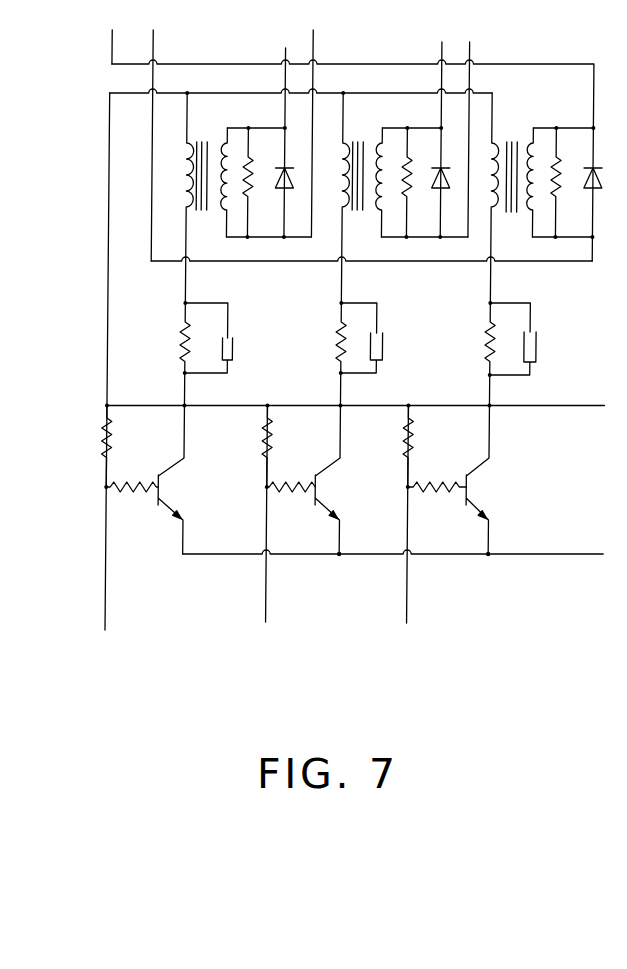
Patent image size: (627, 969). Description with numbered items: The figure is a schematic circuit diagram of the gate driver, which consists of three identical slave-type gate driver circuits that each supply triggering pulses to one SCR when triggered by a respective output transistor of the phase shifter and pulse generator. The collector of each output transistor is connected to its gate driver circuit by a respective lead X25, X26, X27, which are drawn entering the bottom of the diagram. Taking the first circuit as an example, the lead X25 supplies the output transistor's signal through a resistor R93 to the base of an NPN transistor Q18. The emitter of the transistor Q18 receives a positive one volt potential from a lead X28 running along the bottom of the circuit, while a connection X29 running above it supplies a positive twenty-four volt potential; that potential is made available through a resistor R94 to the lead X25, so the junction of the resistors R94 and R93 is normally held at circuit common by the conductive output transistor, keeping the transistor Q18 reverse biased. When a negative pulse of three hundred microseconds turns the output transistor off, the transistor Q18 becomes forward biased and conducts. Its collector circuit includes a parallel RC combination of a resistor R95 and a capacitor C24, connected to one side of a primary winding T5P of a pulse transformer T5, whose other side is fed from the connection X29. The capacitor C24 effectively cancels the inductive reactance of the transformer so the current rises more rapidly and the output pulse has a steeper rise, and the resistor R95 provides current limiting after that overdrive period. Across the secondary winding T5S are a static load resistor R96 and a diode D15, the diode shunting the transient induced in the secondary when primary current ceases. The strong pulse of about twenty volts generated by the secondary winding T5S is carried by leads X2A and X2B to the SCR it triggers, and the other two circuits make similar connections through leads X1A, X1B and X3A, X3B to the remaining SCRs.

The lead X1A is at (112, 52).
The lead X1B is at (154, 47).
The lead X2A is at (286, 55).
The lead X2B is at (314, 46).
The lead X3A is at (441, 47).
The lead X3B is at (470, 47).
The pulse transformer T5 is at (202, 213).
The primary winding T5P is at (187, 198).
The secondary winding T5S is at (222, 147).
The static load resistor R96 is at (252, 168).
The diode D15 is at (276, 189).
The resistor R95 is at (181, 351).
The capacitor C24 is at (234, 352).
The resistor R94 is at (101, 440).
The resistor R93 is at (118, 478).
The NPN transistor Q18 is at (167, 490).
The connection X29 is at (548, 409).
The lead X28 is at (505, 555).
The lead X25 is at (106, 601).
The lead X26 is at (270, 608).
The lead X27 is at (411, 602).